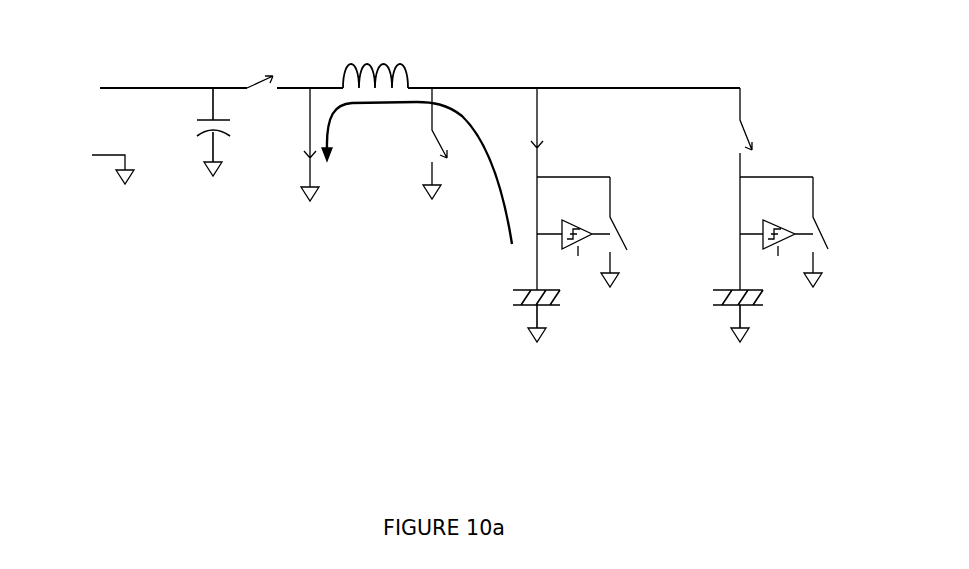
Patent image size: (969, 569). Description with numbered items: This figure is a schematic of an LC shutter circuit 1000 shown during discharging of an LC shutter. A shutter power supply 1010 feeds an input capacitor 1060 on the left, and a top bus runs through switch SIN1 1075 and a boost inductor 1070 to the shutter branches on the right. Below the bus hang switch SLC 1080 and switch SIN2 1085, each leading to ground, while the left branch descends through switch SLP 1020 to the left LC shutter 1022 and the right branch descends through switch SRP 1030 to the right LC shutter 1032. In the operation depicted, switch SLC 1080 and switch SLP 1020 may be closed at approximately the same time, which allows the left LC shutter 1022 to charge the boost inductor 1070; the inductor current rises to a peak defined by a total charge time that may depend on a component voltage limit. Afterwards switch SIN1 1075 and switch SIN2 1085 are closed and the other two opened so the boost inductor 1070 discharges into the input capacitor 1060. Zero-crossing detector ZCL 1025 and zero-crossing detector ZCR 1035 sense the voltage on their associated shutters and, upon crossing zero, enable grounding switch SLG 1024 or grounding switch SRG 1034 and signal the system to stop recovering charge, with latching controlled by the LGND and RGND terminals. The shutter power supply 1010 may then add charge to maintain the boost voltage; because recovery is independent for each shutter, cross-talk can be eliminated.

The LC shutter circuit 1000 is at (330, 382).
The shutter power supply 1010 is at (83, 130).
The input capacitor 1060 is at (203, 154).
The switch SIN1 1075 is at (266, 60).
The boost inductor 1070 is at (393, 64).
The switch SLC 1080 is at (293, 144).
The switch SIN2 1085 is at (419, 143).
The switch SLP 1020 is at (558, 189).
The zero-crossing detector ZCL 1025 is at (573, 228).
The grounding switch SLG 1024 is at (631, 232).
The left LC shutter 1022 is at (518, 327).
The switch SRP 1030 is at (768, 189).
The zero-crossing detector ZCR 1035 is at (776, 228).
The grounding switch SRG 1034 is at (832, 232).
The right LC shutter 1032 is at (724, 327).